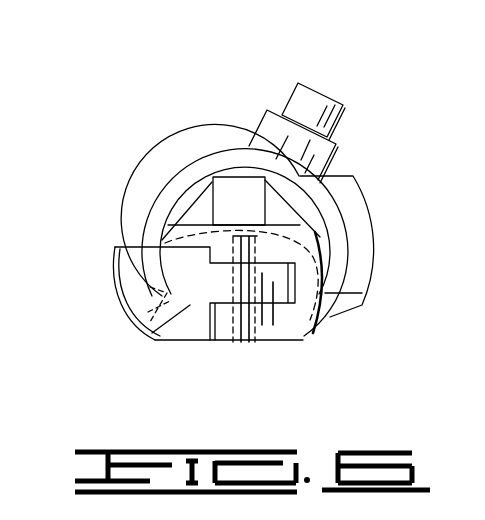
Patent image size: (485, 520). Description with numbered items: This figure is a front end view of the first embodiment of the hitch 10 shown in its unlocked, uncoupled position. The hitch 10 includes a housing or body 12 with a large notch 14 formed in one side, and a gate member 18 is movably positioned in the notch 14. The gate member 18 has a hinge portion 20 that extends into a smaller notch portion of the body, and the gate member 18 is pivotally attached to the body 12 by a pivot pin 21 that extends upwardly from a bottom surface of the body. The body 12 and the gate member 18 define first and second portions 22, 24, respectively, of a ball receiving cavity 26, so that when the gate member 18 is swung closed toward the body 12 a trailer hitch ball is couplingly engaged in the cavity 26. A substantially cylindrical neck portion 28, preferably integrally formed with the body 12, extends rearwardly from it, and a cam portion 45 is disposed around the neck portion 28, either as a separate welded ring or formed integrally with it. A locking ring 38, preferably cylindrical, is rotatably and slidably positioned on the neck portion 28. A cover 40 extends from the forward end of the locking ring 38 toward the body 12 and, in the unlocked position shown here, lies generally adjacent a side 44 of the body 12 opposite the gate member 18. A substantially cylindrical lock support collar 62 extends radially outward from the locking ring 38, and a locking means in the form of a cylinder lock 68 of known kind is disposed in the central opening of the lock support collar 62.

The hitch 10 is at (254, 66).
The housing or body 12 is at (322, 333).
The large notch 14 is at (120, 263).
The gate member 18 is at (155, 342).
The hinge portion 20 is at (273, 290).
The pivot pin 21 is at (233, 320).
The first portion of ball receiving cavity 22 is at (310, 248).
The second portion of ball receiving cavity 24 is at (133, 315).
The ball receiving cavity 26 is at (300, 228).
The neck portion 28 is at (193, 198).
The locking ring 38 is at (210, 163).
The cover 40 is at (365, 243).
The side of body 44 is at (362, 293).
The cam portion 45 is at (168, 210).
The lock support collar 62 is at (270, 133).
The cylinder lock 68 is at (318, 108).